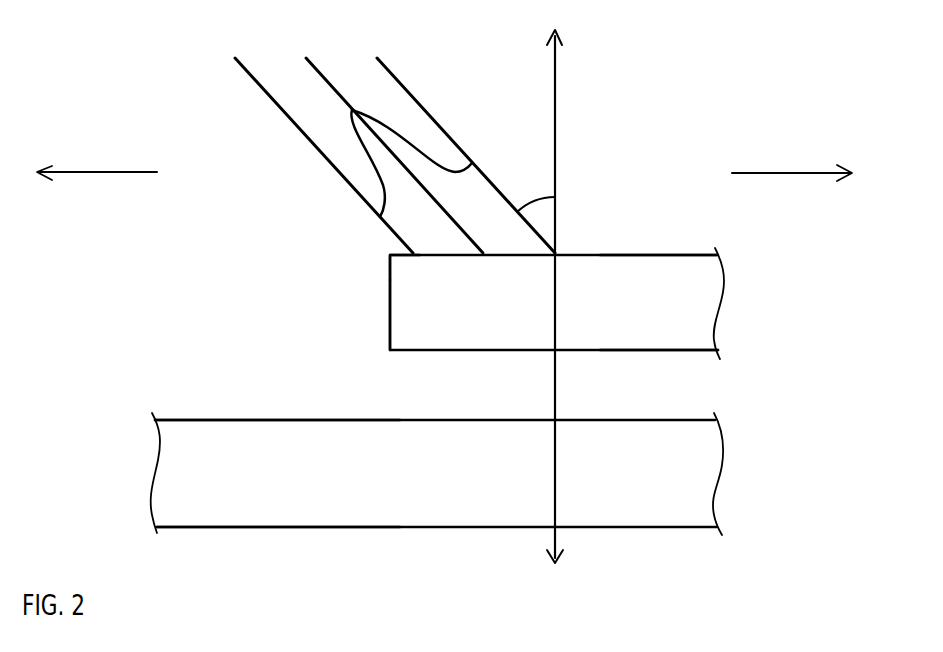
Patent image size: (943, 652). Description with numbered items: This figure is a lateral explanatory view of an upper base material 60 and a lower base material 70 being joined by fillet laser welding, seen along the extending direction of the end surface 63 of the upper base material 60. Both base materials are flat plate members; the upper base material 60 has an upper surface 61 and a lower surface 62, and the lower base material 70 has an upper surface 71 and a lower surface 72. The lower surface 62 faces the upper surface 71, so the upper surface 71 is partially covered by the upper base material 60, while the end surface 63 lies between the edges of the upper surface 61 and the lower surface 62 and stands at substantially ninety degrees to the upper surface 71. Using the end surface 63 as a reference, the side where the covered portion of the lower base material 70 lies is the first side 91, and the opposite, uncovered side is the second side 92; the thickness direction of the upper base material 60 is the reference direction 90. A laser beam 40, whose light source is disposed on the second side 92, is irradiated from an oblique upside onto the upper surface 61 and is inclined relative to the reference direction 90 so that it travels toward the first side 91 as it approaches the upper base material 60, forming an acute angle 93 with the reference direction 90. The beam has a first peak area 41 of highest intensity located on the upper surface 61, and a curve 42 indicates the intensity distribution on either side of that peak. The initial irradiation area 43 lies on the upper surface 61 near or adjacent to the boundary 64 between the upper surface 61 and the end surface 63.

The laser beam 40 is at (292, 118).
The first peak area 41 is at (487, 257).
The curve 42 is at (365, 150).
The initial irradiation area 43 is at (517, 258).
The upper base material 60 is at (726, 295).
The upper surface 61 is at (678, 255).
The lower surface 62 is at (662, 350).
The end surface 63 is at (388, 313).
The boundary 64 is at (388, 253).
The lower base material 70 is at (143, 477).
The upper surface 71 is at (215, 420).
The lower surface 72 is at (298, 527).
The reference direction 90 is at (555, 133).
The first side 91 is at (795, 173).
The second side 92 is at (110, 172).
The angle 93 is at (537, 197).